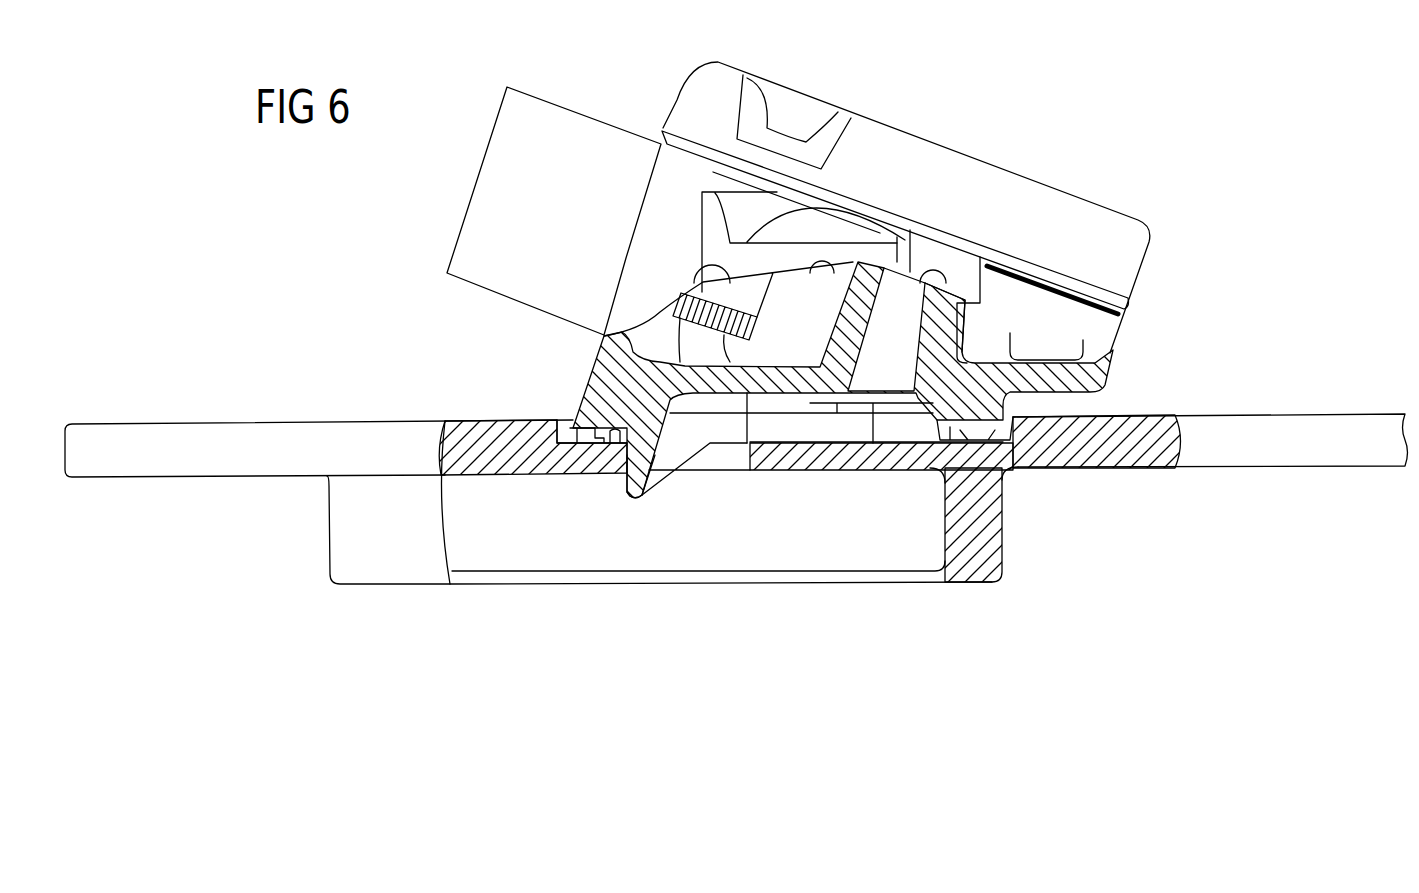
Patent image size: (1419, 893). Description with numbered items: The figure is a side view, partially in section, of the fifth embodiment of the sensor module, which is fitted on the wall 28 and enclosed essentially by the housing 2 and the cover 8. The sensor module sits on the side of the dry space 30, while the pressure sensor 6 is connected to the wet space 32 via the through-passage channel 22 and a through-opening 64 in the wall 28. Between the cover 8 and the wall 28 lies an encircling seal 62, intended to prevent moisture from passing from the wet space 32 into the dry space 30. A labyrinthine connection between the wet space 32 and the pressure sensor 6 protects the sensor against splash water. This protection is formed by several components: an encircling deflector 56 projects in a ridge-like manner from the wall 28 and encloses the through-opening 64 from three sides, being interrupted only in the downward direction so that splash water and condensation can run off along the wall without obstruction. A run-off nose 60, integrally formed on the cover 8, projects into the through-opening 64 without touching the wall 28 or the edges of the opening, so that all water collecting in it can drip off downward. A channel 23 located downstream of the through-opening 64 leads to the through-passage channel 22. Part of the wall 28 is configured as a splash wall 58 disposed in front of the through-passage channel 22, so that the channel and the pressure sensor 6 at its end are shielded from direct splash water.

The housing 2 is at (880, 152).
The pressure sensor 6 is at (907, 314).
The cover 8 is at (1110, 369).
The through-passage channel 22 is at (912, 267).
The channel 23 is at (783, 430).
The wall 28 is at (1148, 458).
The dry space 30 is at (1245, 330).
The wet space 32 is at (266, 556).
The encircling deflector 56 is at (1008, 546).
The splash wall 58 is at (862, 458).
The run-off nose 60 is at (657, 479).
The encircling seal 62 is at (562, 422).
The through-opening 64 is at (720, 462).